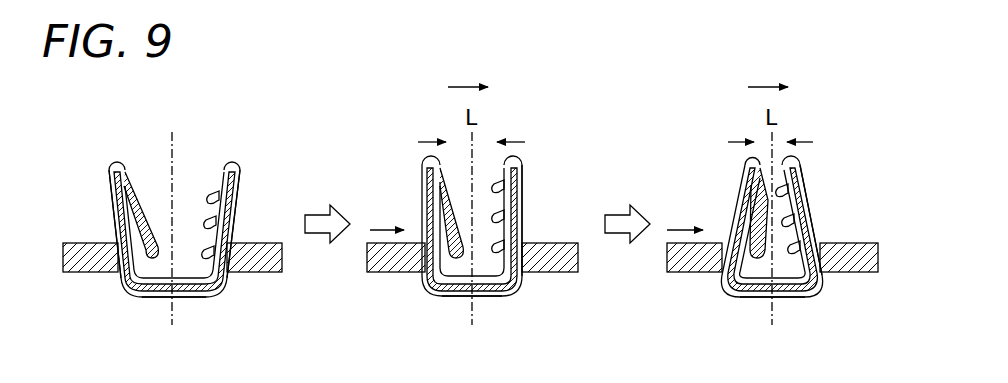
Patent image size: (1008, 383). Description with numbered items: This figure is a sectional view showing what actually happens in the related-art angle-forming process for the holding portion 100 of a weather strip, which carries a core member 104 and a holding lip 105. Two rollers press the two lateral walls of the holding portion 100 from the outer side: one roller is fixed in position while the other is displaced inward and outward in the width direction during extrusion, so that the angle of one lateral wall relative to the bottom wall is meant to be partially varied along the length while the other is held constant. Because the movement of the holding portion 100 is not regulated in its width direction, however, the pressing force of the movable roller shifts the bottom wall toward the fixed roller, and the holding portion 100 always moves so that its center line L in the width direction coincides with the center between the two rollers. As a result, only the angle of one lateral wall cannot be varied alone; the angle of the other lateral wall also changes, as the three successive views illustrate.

The holding portion 100 is at (219, 133).
The core member 104 is at (157, 298).
The holding lip 105 is at (173, 200).